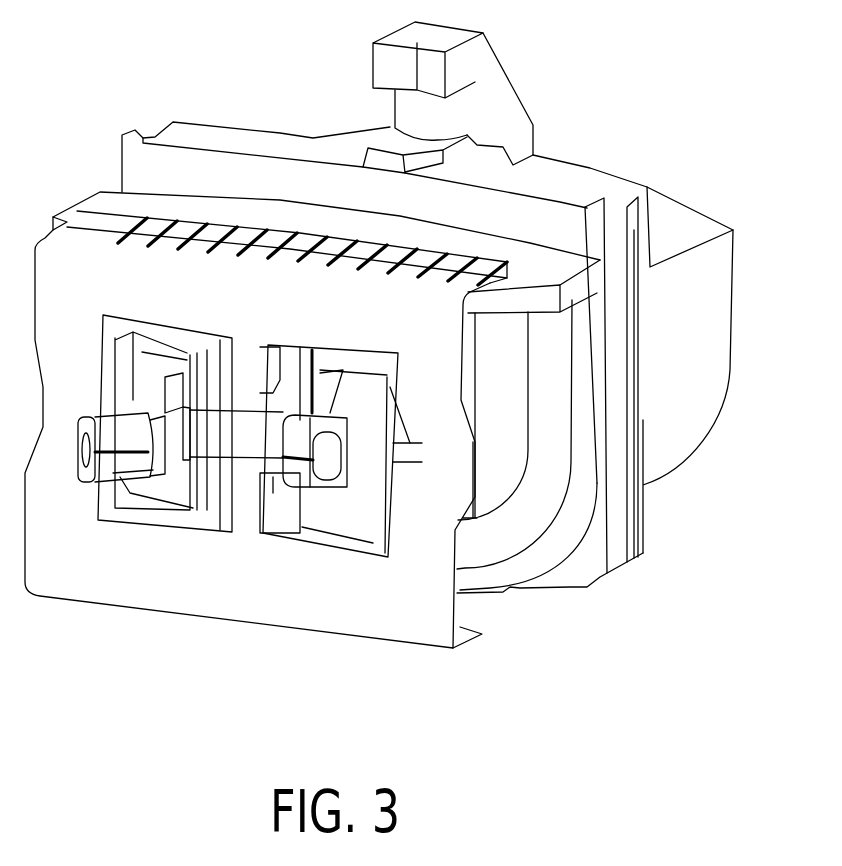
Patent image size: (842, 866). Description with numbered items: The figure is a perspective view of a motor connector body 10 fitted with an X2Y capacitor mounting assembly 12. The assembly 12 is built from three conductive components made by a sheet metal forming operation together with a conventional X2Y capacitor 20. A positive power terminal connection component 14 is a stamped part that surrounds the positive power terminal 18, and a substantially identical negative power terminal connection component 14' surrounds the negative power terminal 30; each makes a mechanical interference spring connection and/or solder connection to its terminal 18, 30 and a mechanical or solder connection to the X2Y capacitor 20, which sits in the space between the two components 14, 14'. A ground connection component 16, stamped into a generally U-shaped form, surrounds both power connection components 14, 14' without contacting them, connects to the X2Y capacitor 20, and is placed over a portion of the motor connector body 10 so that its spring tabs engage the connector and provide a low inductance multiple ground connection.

The motor connector body 10 is at (703, 337).
The X2Y capacitor mounting assembly 12 is at (197, 633).
The positive power terminal connection component 14 is at (165, 398).
The negative power terminal connection component 14' is at (341, 422).
The ground connection component 16 is at (397, 630).
The positive power terminal 18 is at (100, 423).
The X2Y capacitor 20 is at (237, 417).
The negative power terminal 30 is at (332, 470).